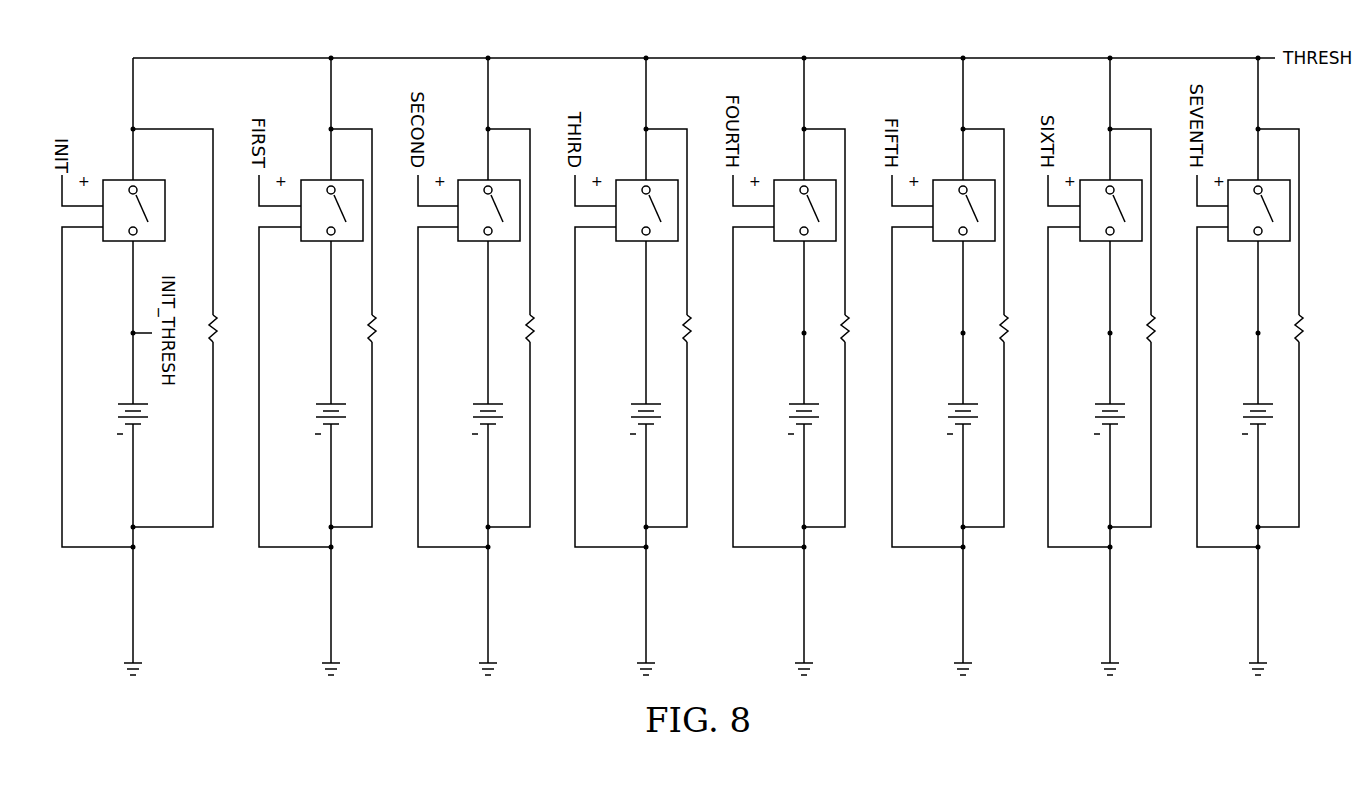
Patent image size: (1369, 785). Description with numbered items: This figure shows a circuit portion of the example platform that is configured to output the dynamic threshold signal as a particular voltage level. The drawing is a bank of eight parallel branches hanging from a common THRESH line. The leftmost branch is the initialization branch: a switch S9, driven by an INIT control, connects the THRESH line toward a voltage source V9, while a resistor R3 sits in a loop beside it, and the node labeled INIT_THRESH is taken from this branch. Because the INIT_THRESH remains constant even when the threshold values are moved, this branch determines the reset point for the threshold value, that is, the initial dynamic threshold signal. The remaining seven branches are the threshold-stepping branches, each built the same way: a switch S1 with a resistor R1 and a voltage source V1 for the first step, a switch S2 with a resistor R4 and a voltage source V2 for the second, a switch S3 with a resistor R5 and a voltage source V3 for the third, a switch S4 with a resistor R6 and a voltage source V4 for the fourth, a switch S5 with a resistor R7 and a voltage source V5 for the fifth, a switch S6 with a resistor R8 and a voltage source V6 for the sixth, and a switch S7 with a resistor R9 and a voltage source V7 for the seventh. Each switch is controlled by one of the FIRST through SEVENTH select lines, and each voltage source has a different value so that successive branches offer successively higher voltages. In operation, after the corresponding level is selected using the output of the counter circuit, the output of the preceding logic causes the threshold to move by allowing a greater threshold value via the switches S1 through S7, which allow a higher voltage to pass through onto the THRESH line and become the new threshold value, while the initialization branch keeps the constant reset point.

The init switch S9 is at (134, 210).
The 1k resistor R3 is at (226, 329).
The 0.01 V voltage source V9 is at (116, 410).
The switch S1 is at (332, 210).
The 1k resistor R1 is at (385, 329).
The 0.01 V voltage source V1 is at (314, 410).
The switch S2 is at (489, 210).
The 1k resistor R4 is at (543, 329).
The 0.015 V voltage source V2 is at (467, 410).
The switch S3 is at (647, 210).
The 1k resistor R5 is at (700, 329).
The 0.025 V voltage source V3 is at (625, 410).
The switch S4 is at (805, 210).
The 1k resistor R6 is at (858, 329).
The 0.045 V voltage source V4 is at (783, 410).
The switch S5 is at (964, 210).
The 1k resistor R7 is at (1017, 329).
The 0.075 V voltage source V5 is at (942, 410).
The switch S6 is at (1111, 210).
The 1k resistor R8 is at (1164, 329).
The 0.01 V voltage source V6 is at (1093, 410).
The switch S7 is at (1259, 210).
The 1k resistor R9 is at (1312, 329).
The 0.11 V voltage source V7 is at (1241, 410).